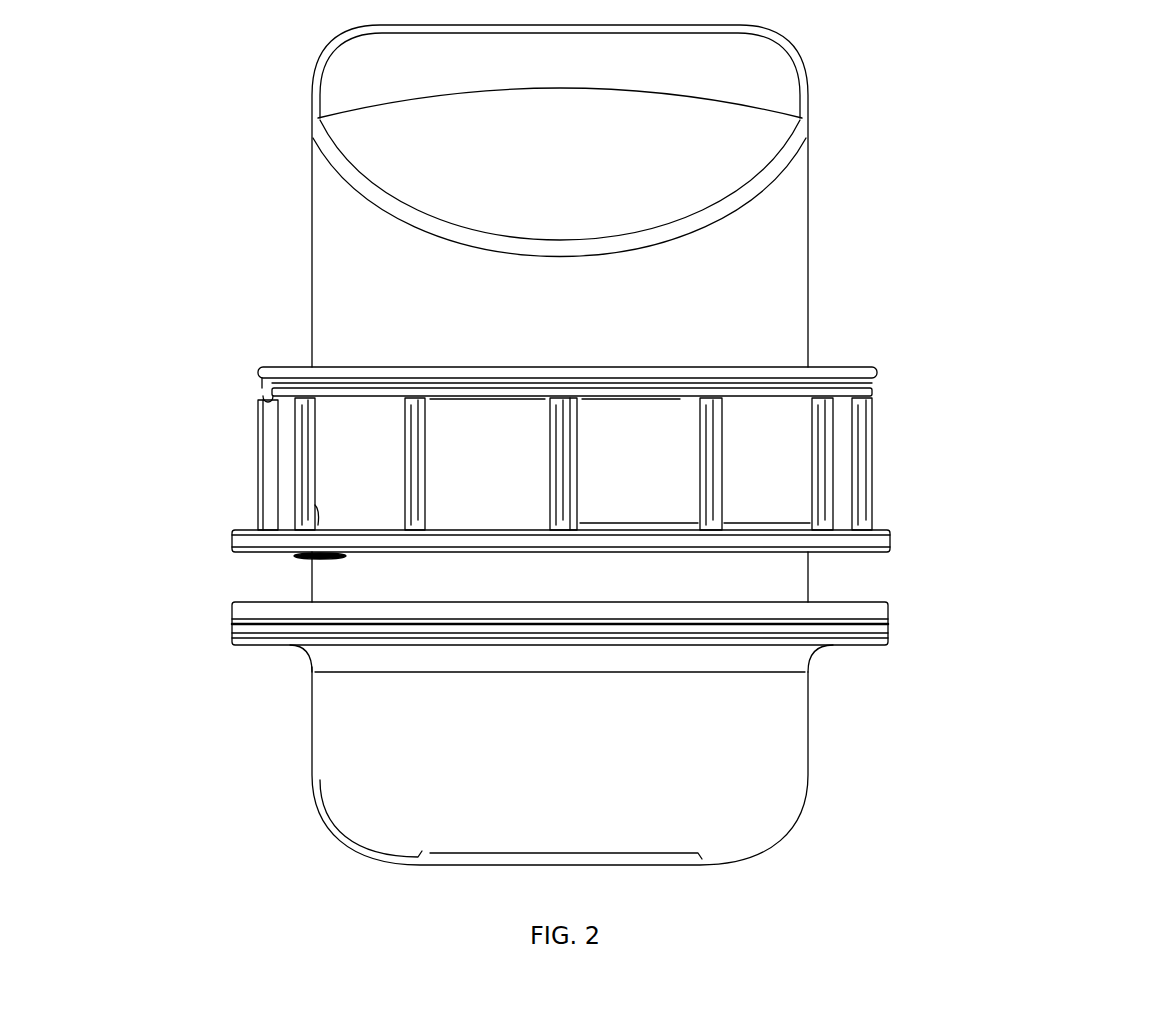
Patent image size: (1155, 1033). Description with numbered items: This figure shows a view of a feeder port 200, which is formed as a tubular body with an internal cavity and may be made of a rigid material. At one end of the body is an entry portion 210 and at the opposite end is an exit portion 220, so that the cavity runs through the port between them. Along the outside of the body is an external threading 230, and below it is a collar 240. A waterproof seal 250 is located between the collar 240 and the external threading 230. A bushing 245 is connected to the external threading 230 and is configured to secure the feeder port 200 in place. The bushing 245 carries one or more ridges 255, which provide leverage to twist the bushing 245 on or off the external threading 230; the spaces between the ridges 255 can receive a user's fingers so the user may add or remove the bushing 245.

The feeder port 200 is at (1107, 71).
The entry portion 210 is at (780, 135).
The exit portion 220 is at (744, 862).
The external threading 230 is at (304, 563).
The collar 240 is at (879, 648).
The bushing 245 is at (879, 387).
The waterproof seal 250 is at (889, 617).
The ridges 255 is at (868, 479).